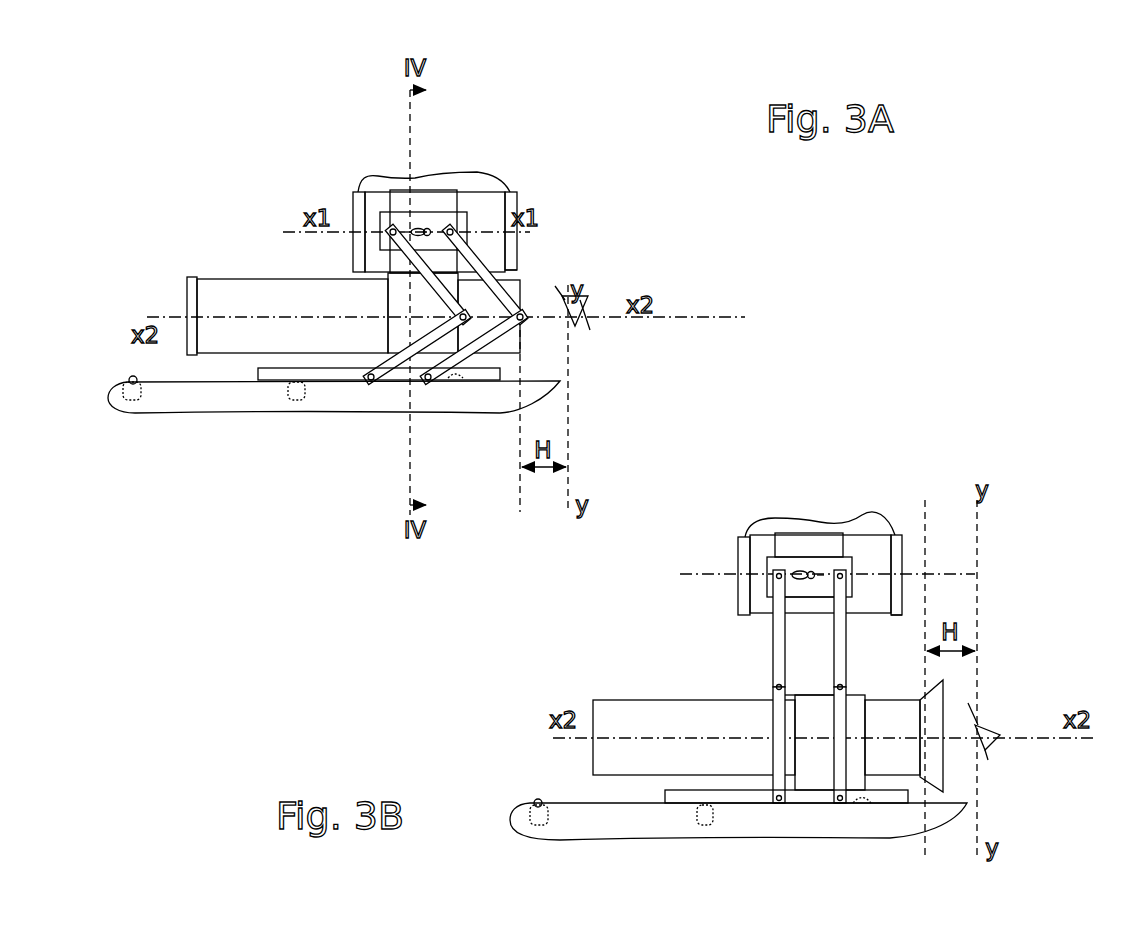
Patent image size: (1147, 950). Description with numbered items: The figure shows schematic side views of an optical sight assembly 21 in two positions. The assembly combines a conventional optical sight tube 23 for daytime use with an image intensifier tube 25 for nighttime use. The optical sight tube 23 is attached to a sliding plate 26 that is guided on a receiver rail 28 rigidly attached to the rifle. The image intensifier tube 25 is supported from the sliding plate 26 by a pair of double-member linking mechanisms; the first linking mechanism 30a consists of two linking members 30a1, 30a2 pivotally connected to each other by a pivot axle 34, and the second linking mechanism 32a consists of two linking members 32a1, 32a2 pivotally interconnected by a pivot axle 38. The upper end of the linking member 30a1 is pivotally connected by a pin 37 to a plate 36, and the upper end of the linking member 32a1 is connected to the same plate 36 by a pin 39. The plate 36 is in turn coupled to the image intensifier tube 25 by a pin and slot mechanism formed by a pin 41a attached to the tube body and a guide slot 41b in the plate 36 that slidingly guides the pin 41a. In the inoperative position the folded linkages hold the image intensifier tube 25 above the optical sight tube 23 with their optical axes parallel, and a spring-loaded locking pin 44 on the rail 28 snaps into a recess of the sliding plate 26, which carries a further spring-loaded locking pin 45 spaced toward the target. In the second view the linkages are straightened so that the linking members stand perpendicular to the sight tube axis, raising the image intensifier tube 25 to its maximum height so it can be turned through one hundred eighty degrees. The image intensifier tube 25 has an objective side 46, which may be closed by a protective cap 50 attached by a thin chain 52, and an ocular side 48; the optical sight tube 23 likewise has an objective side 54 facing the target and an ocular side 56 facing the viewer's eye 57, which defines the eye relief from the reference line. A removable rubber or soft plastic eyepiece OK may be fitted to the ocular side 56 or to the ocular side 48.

In FIG. 3A, the optical sight assembly 21 is at (293, 92).
In FIG. 3A, the optical sight tube 23 is at (202, 208).
In FIG. 3B, the optical sight tube 23 is at (580, 695).
In FIG. 3A, the image intensifier tube 25 is at (427, 155).
In FIG. 3B, the image intensifier tube 25 is at (822, 506).
In FIG. 3A, the sliding plate 26 is at (272, 372).
In FIG. 3B, the sliding plate 26 is at (786, 796).
In FIG. 3A, the receiver rail 28 is at (408, 398).
In FIG. 3A, the first linking mechanism 30a is at (404, 265).
In FIG. 3B, the first linking mechanism 30a is at (752, 666).
In FIG. 3A, the linking member 30a1 is at (412, 232).
In FIG. 3B, the linking member 30a1 is at (777, 630).
In FIG. 3A, the linking member 30a2 is at (392, 358).
In FIG. 3B, the linking member 30a2 is at (775, 745).
In FIG. 3A, the second linking mechanism 32a is at (512, 288).
In FIG. 3B, the second linking mechanism 32a is at (860, 667).
In FIG. 3A, the linking member 32a1 is at (492, 262).
In FIG. 3B, the linking member 32a1 is at (840, 622).
In FIG. 3A, the linking member 32a2 is at (488, 358).
In FIG. 3B, the linking member 32a2 is at (840, 753).
In FIG. 3A, the pivot axle 34 is at (294, 402).
In FIG. 3A, the plate 36 is at (386, 192).
In FIG. 3A, the pin 37 is at (393, 233).
In FIG. 3A, the pivot axle 38 is at (533, 320).
In FIG. 3A, the pin 39 is at (463, 236).
In FIG. 3B, the pin 41a is at (822, 570).
In FIG. 3B, the guide slot 41b is at (825, 568).
In FIG. 3A, the spring-loaded locking pin 44 is at (280, 383).
In FIG. 3B, the spring-loaded locking pin 44 is at (738, 819).
In FIG. 3A, the spring-loaded locking pin 45 is at (130, 378).
In FIG. 3A, the objective side 46 is at (522, 203).
In FIG. 3B, the objective side 46 is at (922, 592).
In FIG. 3A, the ocular side 48 is at (351, 203).
In FIG. 3B, the ocular side 48 is at (722, 553).
In FIG. 3A, the protective cap 50 is at (514, 268).
In FIG. 3B, the protective cap 50 is at (898, 602).
In FIG. 3A, the thin chain 52 is at (463, 175).
In FIG. 3B, the thin chain 52 is at (870, 523).
In FIG. 3A, the objective side 54 is at (180, 282).
In FIG. 3A, the ocular side 56 is at (534, 345).
In FIG. 3A, the viewer's eye 57 is at (586, 300).
In FIG. 3B, the viewer's eye 57 is at (988, 725).
In FIG. 3B, the removable eyepiece ok is at (938, 750).